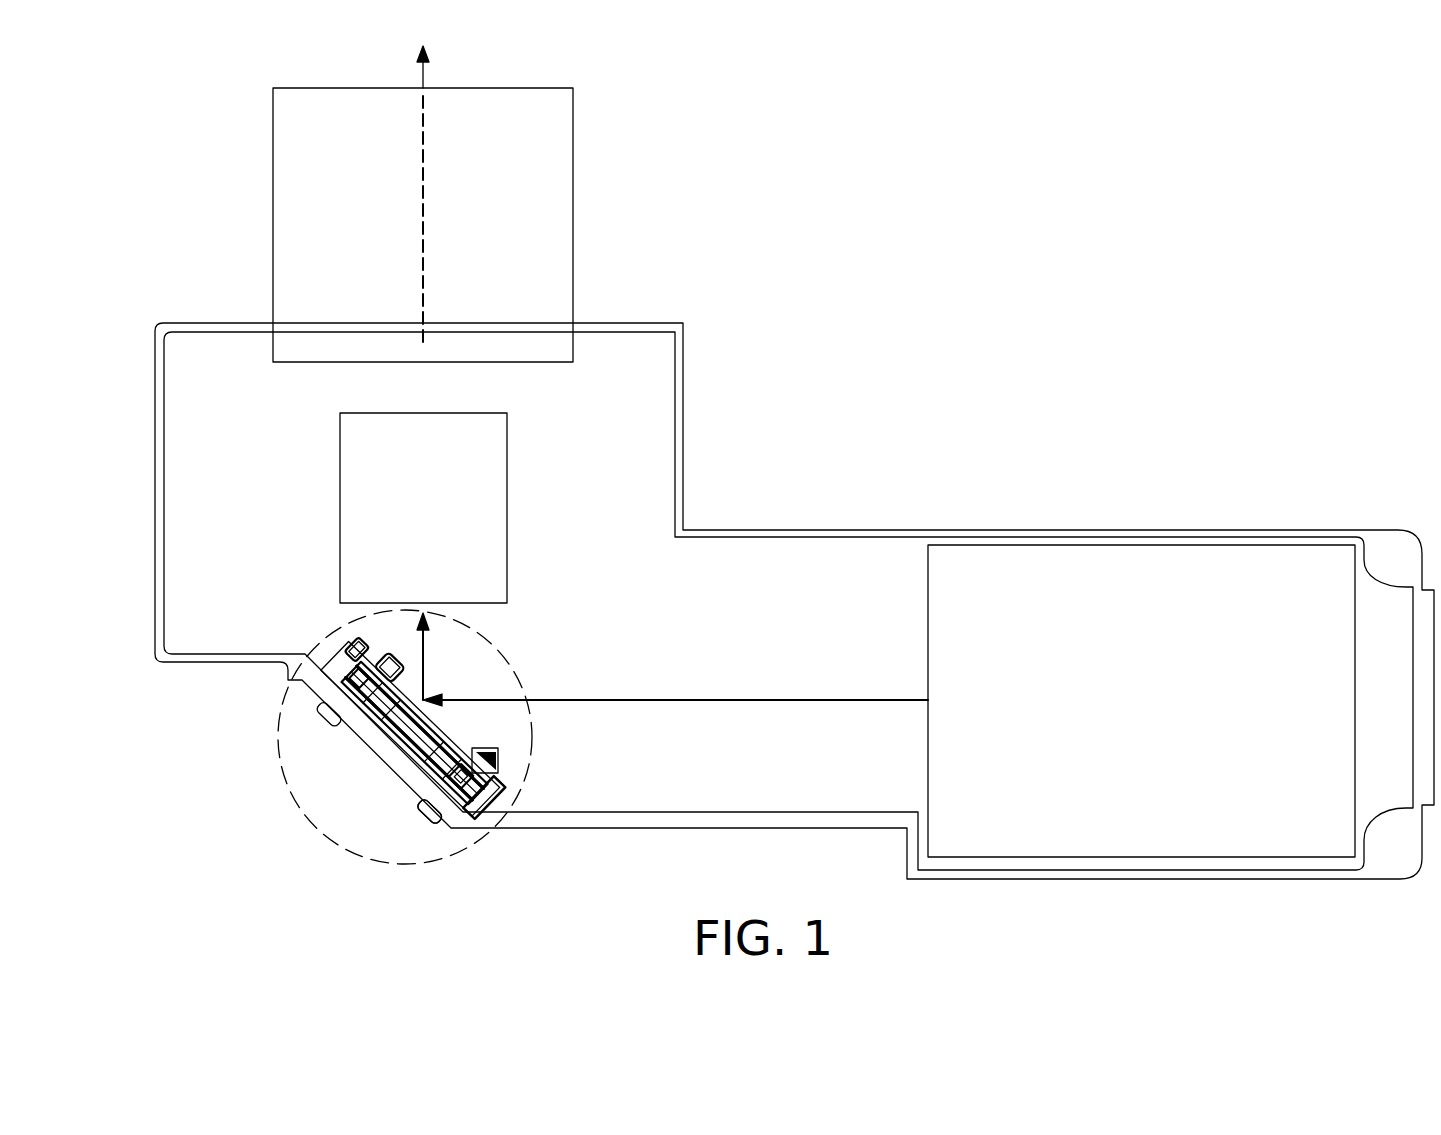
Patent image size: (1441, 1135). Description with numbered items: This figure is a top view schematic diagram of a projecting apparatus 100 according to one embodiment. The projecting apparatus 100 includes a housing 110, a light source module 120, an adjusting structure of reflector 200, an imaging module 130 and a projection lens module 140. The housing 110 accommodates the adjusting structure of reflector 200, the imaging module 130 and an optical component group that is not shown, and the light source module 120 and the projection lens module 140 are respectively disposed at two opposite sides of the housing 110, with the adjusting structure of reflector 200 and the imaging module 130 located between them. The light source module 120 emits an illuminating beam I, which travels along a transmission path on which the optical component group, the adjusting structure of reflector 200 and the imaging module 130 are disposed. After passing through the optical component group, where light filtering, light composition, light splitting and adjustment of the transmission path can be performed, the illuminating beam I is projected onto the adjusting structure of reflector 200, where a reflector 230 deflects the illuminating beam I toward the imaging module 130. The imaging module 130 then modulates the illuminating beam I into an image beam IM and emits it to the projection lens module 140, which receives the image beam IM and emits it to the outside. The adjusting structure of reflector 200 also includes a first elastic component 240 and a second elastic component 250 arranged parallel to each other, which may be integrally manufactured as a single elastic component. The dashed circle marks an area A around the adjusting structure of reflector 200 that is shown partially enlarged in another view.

The projecting apparatus 100 is at (794, 619).
The housing 110 is at (1216, 532).
The light source module 120 is at (1103, 558).
The imaging module 130 is at (360, 489).
The projection lens module 140 is at (557, 197).
The adjusting structure of reflector 200 is at (324, 674).
The reflector 230 is at (360, 687).
The first elastic component 240 is at (423, 767).
The second elastic component 250 is at (377, 718).
The image beam IM is at (425, 76).
The illuminating beam I is at (840, 700).
The area A is at (330, 847).